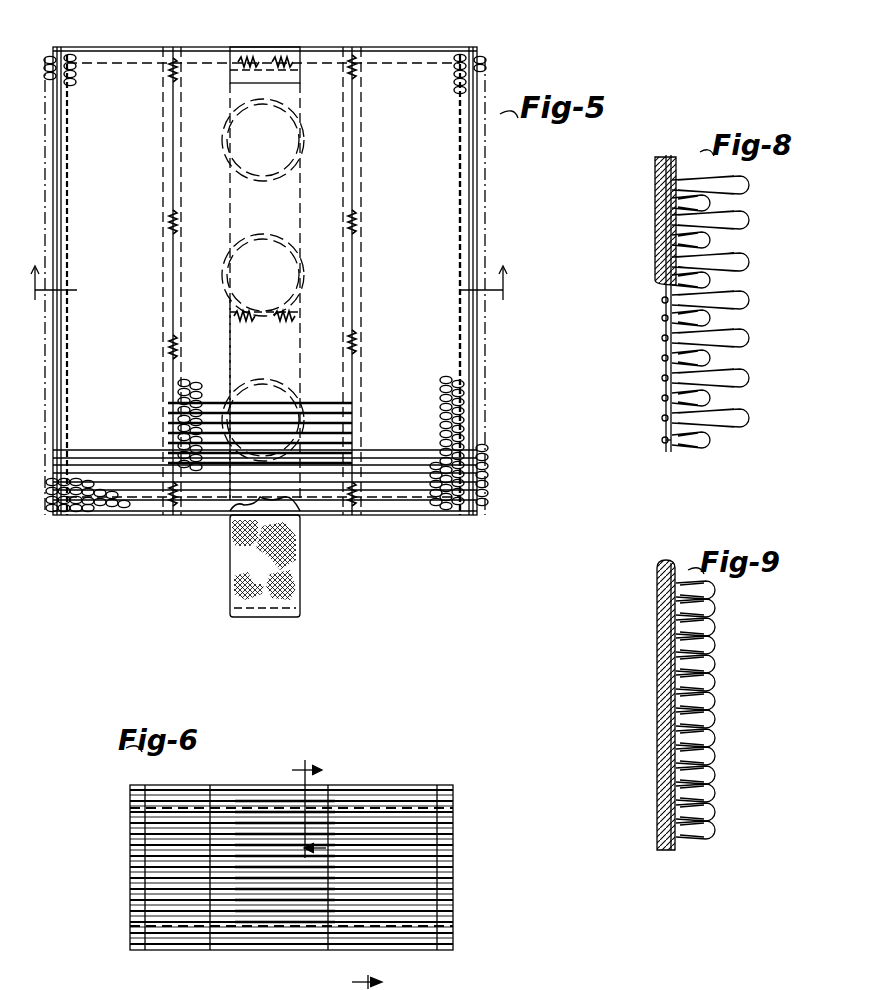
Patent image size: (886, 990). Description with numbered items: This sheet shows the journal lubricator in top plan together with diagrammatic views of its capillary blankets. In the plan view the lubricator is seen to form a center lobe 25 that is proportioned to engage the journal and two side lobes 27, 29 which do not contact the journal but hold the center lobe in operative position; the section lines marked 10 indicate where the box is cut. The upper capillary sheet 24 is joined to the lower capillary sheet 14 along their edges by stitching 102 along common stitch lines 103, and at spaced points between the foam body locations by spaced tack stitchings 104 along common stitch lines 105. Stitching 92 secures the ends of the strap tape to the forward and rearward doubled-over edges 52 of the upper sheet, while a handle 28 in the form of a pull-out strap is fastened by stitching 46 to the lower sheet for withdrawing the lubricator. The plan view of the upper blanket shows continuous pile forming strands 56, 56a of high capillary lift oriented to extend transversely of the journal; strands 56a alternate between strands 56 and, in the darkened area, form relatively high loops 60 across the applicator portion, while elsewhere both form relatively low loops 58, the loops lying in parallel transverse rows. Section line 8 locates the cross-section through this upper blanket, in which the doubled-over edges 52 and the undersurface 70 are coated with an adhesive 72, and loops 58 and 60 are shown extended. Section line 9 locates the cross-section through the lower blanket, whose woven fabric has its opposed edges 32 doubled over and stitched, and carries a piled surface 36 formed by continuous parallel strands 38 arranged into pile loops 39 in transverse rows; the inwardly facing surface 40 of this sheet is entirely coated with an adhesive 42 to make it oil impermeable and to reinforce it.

In FIG. 5, the journal box 10 is at (277, 293).
In FIG. 5, the stitching 92 is at (290, 40).
In FIG. 5, the tack stitchings 104 is at (170, 80).
In FIG. 5, the stitching 102 is at (462, 266).
In FIG. 5, the stitching 46 is at (284, 312).
In FIG. 5, the pile forming strands 56 is at (122, 454).
In FIG. 8, the pile forming strands 56 is at (662, 318).
In FIG. 6, the pile forming strands 56 is at (128, 880).
In FIG. 5, the pile forming strands 56a is at (178, 452).
In FIG. 8, the pile forming strands 56a is at (662, 340).
In FIG. 6, the pile forming strands 56a is at (160, 866).
In FIG. 5, the high pile loops 60 is at (178, 386).
In FIG. 8, the high pile loops 60 is at (750, 210).
In FIG. 5, the low pile loops 58 is at (178, 400).
In FIG. 8, the low pile loops 58 is at (716, 284).
In FIG. 5, the handle 28 is at (304, 600).
In FIG. 5, the side lobe 27 is at (140, 524).
In FIG. 5, the center lobe 25 is at (341, 524).
In FIG. 5, the side lobe 29 is at (438, 520).
In FIG. 8, the edges 52 is at (656, 166).
In FIG. 8, the adhesive 72 is at (662, 206).
In FIG. 8, the upper capillary sheet 24 is at (660, 398).
In FIG. 6, the upper capillary sheet 24 is at (126, 924).
In FIG. 8, the undersurface 70 is at (662, 432).
In FIG. 9, the edges 32 is at (666, 564).
In FIG. 6, the edges 32 is at (384, 989).
In FIG. 9, the piled surface 36 is at (720, 644).
In FIG. 9, the adhesive 42 is at (656, 650).
In FIG. 9, the pile loops 39 is at (706, 706).
In FIG. 9, the strands 38 is at (658, 734).
In FIG. 9, the lower capillary sheet 14 is at (654, 760).
In FIG. 9, the inwardly facing surface 40 is at (658, 820).
In FIG. 6, the common stitch lines 105 is at (210, 788).
In FIG. 6, the common stitch lines 103 is at (146, 786).
In FIG. 6, the section line 8- 8 is at (309, 806).
In FIG. 6, the section line 9- 9 is at (364, 975).